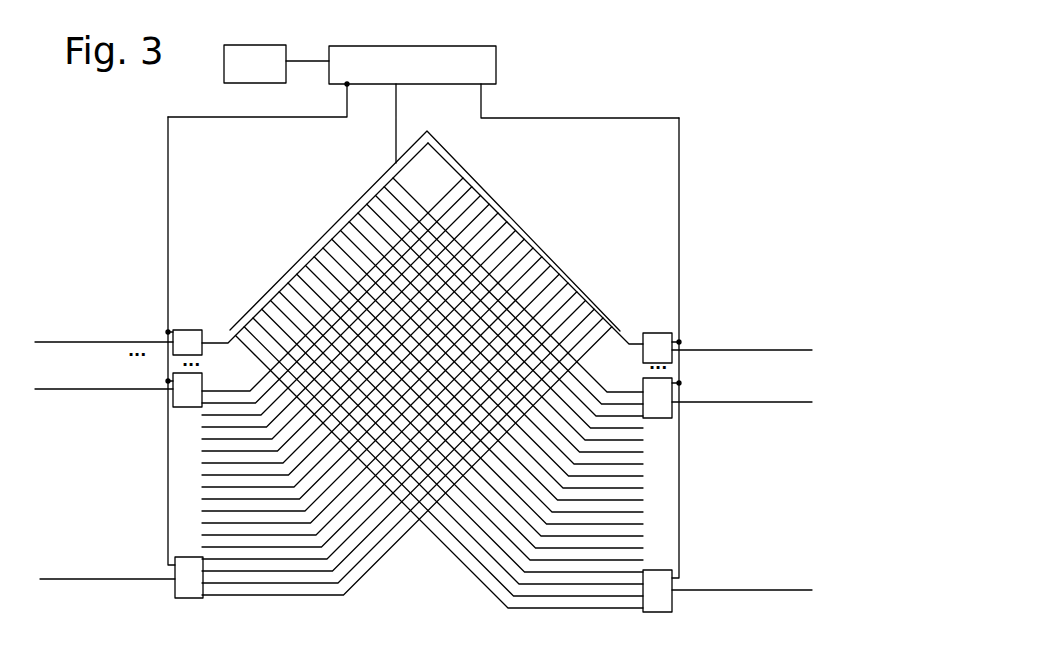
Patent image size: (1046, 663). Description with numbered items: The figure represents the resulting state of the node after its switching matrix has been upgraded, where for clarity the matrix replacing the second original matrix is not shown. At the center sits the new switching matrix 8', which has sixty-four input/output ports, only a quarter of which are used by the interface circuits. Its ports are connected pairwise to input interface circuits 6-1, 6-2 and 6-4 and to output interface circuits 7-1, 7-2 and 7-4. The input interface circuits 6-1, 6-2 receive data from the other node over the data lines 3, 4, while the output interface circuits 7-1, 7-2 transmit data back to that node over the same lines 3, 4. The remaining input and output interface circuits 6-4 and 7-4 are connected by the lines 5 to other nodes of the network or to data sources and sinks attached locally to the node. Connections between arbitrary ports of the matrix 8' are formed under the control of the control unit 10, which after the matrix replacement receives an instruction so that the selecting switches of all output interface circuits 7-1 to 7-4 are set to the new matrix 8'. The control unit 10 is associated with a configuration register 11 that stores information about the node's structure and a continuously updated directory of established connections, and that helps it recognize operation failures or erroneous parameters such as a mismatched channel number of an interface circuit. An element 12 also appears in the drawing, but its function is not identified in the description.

The data line 3 is at (97, 580).
The data line 4 is at (95, 392).
The lines 5 is at (123, 340).
The input interface circuit 6-1 is at (672, 612).
The input interface circuit 6-2 is at (672, 415).
The input interface circuit 6-4 is at (643, 331).
The output interface circuit 7-1 is at (185, 593).
The output interface circuit 7-2 is at (188, 383).
The output interface circuit 7-4 is at (183, 337).
The new switching matrix 8' is at (411, 363).
The control unit 10 is at (477, 70).
The configuration register 11 is at (231, 77).
The output waveguide bundle 12 is at (617, 612).